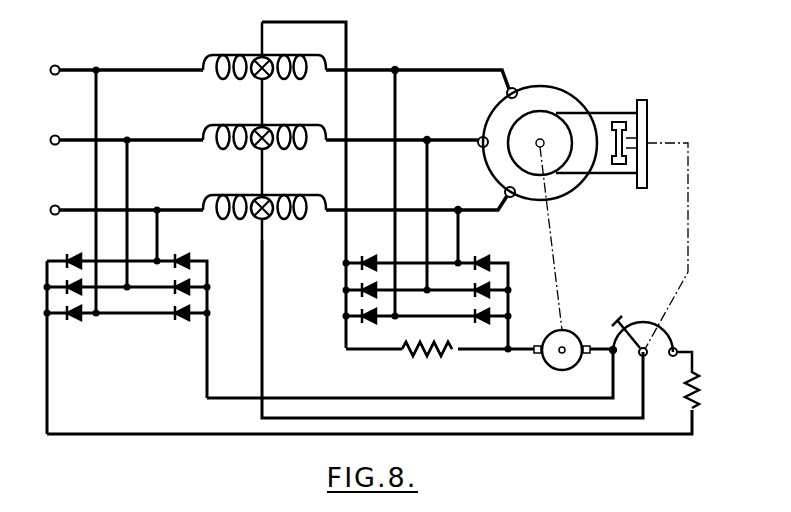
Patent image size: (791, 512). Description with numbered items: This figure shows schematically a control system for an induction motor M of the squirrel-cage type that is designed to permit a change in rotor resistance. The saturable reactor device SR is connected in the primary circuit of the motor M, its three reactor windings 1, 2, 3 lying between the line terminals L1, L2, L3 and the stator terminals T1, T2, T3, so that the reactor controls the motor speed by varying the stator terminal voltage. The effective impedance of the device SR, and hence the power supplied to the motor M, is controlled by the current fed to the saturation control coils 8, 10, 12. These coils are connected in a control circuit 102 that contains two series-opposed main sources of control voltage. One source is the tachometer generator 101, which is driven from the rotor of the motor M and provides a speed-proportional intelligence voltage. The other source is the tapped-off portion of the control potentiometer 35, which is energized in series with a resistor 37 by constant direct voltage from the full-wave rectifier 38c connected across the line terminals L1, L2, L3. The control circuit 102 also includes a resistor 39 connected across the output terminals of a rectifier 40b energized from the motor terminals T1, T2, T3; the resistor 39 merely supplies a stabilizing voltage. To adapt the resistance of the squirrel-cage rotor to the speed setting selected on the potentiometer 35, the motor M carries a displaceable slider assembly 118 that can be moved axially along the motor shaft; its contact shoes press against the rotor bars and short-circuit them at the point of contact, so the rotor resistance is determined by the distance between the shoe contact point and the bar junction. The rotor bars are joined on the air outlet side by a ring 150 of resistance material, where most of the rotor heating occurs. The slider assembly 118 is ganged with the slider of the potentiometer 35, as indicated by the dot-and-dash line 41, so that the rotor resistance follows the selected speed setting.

The line terminal L1 is at (114, 70).
The line terminal L2 is at (114, 140).
The line terminal L3 is at (114, 210).
The saturable reactor device SR is at (242, 109).
The reactor winding 1 is at (319, 56).
The reactor winding 2 is at (319, 126).
The reactor winding 3 is at (319, 196).
The saturation control coil 8 is at (266, 83).
The saturation control coil 10 is at (266, 153).
The saturation control coil 12 is at (266, 223).
The full-wave rectifier 38c is at (197, 296).
The rectifier 40b is at (346, 299).
The resistor 39 is at (430, 354).
The control circuit 102 is at (261, 341).
The motor M is at (547, 81).
The stator terminal T1 is at (506, 93).
The stator terminal T2 is at (480, 138).
The stator terminal T3 is at (504, 194).
The ring 150 is at (650, 106).
The slider assembly 118 is at (620, 145).
The dot-and-dash line 41 is at (683, 286).
The control potentiometer 35 is at (631, 323).
The resistor 37 is at (684, 390).
The tachometer generator 101 is at (562, 370).